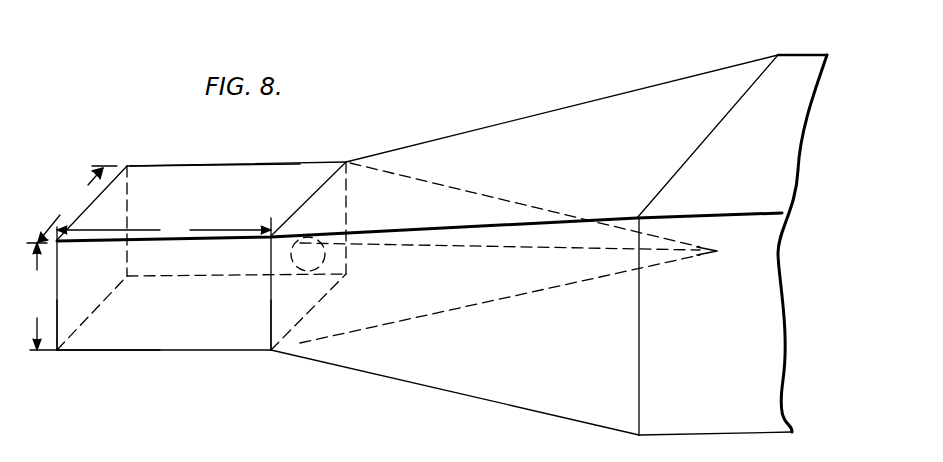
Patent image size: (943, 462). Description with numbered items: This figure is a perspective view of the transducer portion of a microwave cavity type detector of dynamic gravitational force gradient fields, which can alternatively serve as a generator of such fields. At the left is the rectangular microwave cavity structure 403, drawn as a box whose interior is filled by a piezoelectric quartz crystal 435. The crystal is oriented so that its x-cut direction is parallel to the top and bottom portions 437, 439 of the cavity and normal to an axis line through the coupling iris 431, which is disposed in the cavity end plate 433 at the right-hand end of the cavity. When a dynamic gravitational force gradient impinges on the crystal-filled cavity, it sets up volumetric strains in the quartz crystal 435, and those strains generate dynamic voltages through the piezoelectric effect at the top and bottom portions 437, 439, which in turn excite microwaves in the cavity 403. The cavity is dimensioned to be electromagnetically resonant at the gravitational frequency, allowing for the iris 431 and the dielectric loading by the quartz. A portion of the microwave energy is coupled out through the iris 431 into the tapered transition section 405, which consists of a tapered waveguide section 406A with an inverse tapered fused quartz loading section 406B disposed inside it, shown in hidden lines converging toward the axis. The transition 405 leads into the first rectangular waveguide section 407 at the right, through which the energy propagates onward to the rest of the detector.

The rectangular microwave cavity structure 403 is at (287, 156).
The tapered transition section 405 is at (613, 87).
The tapered waveguide section 406A is at (548, 92).
The inverse tapered fused quartz loading section 406B is at (502, 202).
The first rectangular waveguide section 407 is at (795, 67).
The coupling iris 431 is at (314, 240).
The cavity end plate 433 is at (298, 298).
The piezoelectric quartz crystal 435 is at (157, 337).
The top portion of the cavity 437 is at (208, 178).
The bottom portion of the cavity 439 is at (225, 330).